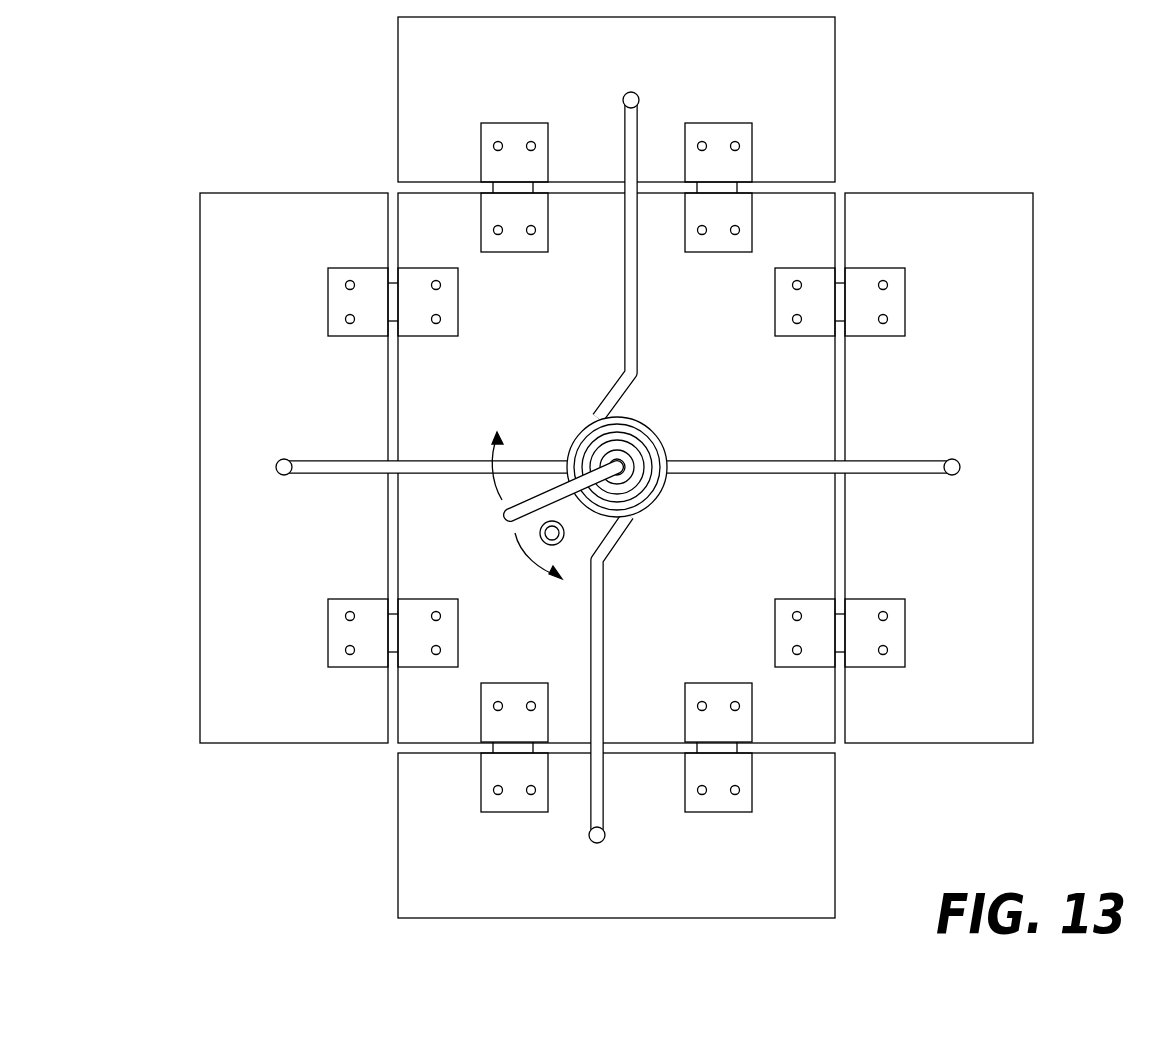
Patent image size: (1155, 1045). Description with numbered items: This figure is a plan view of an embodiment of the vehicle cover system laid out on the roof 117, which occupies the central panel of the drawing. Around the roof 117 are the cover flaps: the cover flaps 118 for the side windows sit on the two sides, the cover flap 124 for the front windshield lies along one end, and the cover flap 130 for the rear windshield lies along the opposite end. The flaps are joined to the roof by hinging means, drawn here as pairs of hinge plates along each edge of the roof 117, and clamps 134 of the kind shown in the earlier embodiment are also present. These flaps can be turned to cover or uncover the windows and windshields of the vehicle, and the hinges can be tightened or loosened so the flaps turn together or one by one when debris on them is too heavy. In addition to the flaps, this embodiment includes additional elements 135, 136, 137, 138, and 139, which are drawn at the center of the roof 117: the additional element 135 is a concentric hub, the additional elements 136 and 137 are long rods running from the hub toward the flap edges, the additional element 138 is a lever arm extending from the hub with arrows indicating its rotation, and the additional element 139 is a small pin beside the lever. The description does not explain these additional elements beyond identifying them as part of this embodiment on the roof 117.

The cover flap for rear windshield 130 is at (410, 105).
The roof 117 is at (793, 225).
The cover flaps for side windows 118 is at (976, 231).
The cover flap for front windshield 124 is at (410, 831).
The clamps 134 is at (898, 633).
The additional element 135 is at (663, 455).
The additional element 136 is at (595, 627).
The additional element 137 is at (960, 467).
The additional element 138 is at (510, 515).
The additional element 139 is at (565, 533).